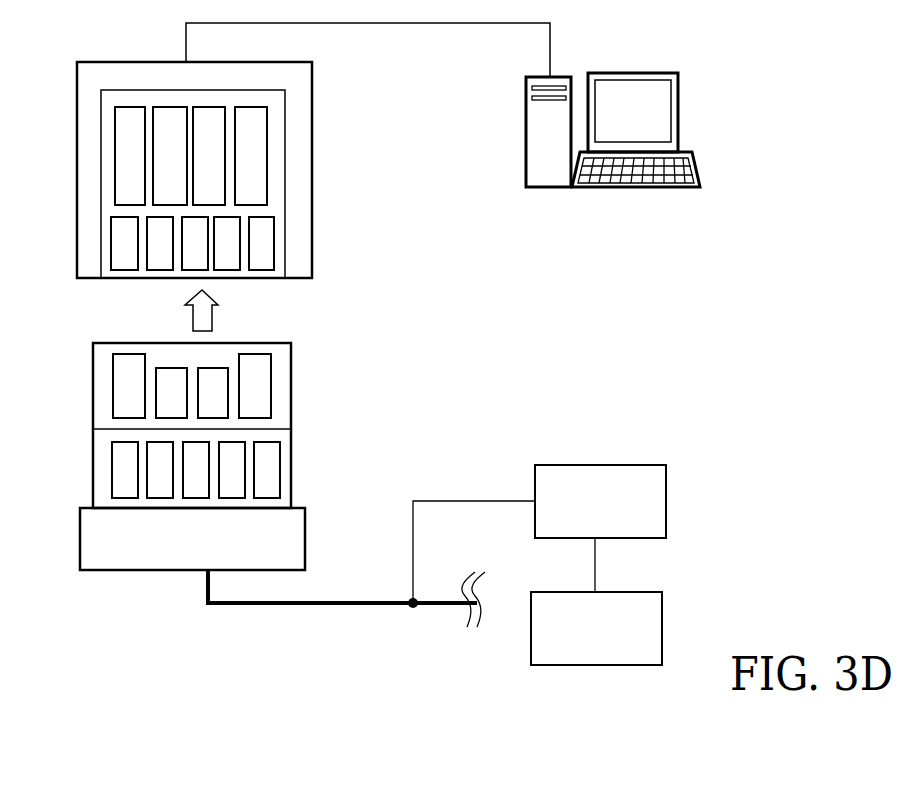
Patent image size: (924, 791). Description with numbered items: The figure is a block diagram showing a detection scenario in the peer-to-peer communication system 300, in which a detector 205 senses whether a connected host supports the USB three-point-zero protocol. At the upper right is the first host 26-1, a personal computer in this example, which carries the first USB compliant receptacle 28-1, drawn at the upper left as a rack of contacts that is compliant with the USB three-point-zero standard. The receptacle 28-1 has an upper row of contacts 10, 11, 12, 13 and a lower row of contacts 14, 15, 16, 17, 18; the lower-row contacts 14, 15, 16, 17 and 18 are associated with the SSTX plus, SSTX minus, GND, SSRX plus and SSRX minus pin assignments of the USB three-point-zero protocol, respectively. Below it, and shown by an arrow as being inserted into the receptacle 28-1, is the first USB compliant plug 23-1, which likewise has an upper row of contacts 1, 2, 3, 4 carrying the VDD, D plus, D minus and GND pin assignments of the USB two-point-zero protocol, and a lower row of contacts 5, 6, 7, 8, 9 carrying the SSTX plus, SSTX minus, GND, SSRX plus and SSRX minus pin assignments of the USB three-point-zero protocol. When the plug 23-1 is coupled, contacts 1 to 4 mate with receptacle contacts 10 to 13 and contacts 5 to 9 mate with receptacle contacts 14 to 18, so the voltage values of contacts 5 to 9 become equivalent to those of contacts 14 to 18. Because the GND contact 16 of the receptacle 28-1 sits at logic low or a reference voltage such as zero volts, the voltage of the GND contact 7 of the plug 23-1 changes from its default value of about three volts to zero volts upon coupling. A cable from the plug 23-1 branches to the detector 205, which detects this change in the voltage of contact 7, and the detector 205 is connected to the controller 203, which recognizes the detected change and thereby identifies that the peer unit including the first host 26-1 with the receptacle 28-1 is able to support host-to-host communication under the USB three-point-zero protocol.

The peer-to-peer communication system 300 is at (909, 63).
The first USB compliant receptacle 28-1 is at (233, 170).
The first host 26-1 is at (678, 107).
The first USB compliant plug 23-1 is at (217, 456).
The detector 205 is at (625, 465).
The controller 203 is at (653, 592).
The contact 1 is at (129, 386).
The contact 2 is at (171, 393).
The contact 3 is at (213, 393).
The contact 4 is at (255, 386).
The contact 5 is at (125, 470).
The contact 6 is at (160, 470).
The contact 7 is at (196, 470).
The contact 8 is at (232, 470).
The contact 9 is at (267, 470).
The contact 10 is at (130, 156).
The contact 11 is at (170, 156).
The contact 12 is at (209, 156).
The contact 13 is at (251, 156).
The contact 14 is at (124, 243).
The contact 15 is at (160, 243).
The contact 16 is at (195, 243).
The contact 17 is at (227, 243).
The contact 18 is at (261, 243).